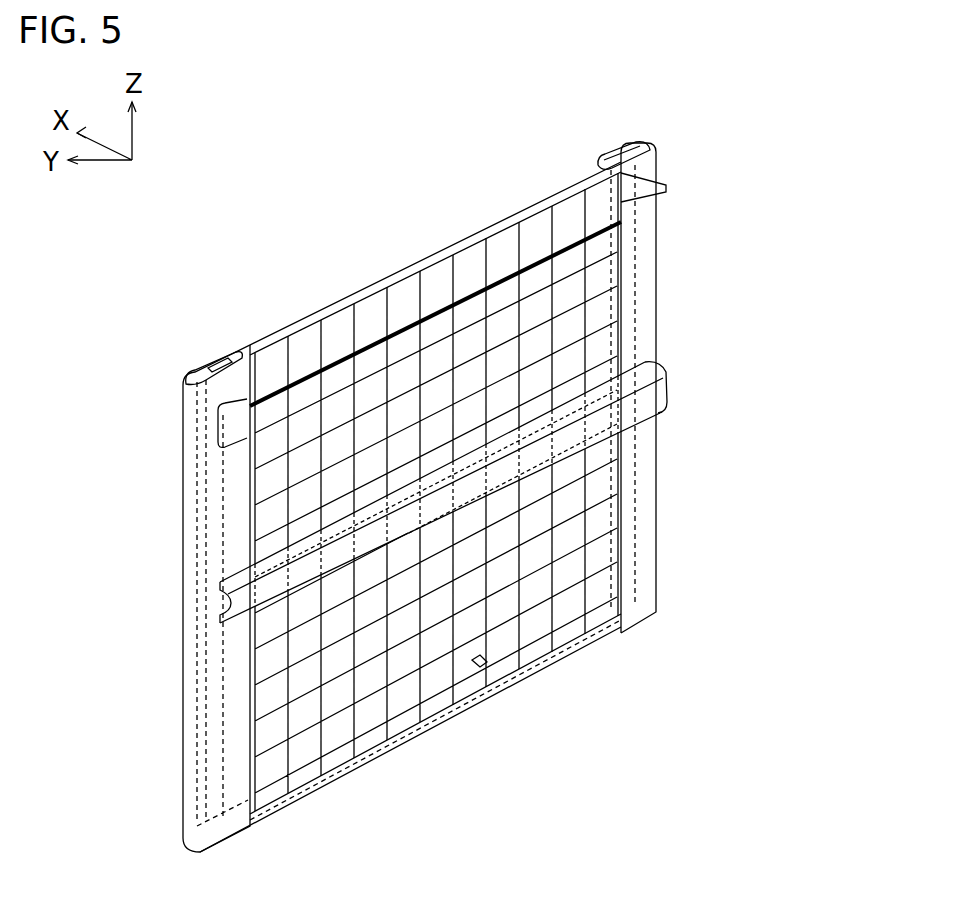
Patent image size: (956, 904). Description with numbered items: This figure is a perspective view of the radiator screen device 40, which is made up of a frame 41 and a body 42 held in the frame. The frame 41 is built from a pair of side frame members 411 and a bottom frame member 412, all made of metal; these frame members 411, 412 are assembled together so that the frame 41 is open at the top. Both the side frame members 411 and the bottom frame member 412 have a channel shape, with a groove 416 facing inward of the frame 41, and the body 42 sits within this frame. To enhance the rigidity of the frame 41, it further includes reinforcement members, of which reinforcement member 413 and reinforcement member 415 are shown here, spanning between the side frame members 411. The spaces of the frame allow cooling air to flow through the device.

The radiator screen device 40 is at (740, 247).
The frame 41 is at (643, 266).
The body 42 is at (548, 338).
The side frame members 411 is at (645, 518).
The bottom frame member 412 is at (413, 728).
The reinforcement member 413 is at (470, 280).
The reinforcement member 415 is at (647, 400).
The groove 416 is at (638, 147).